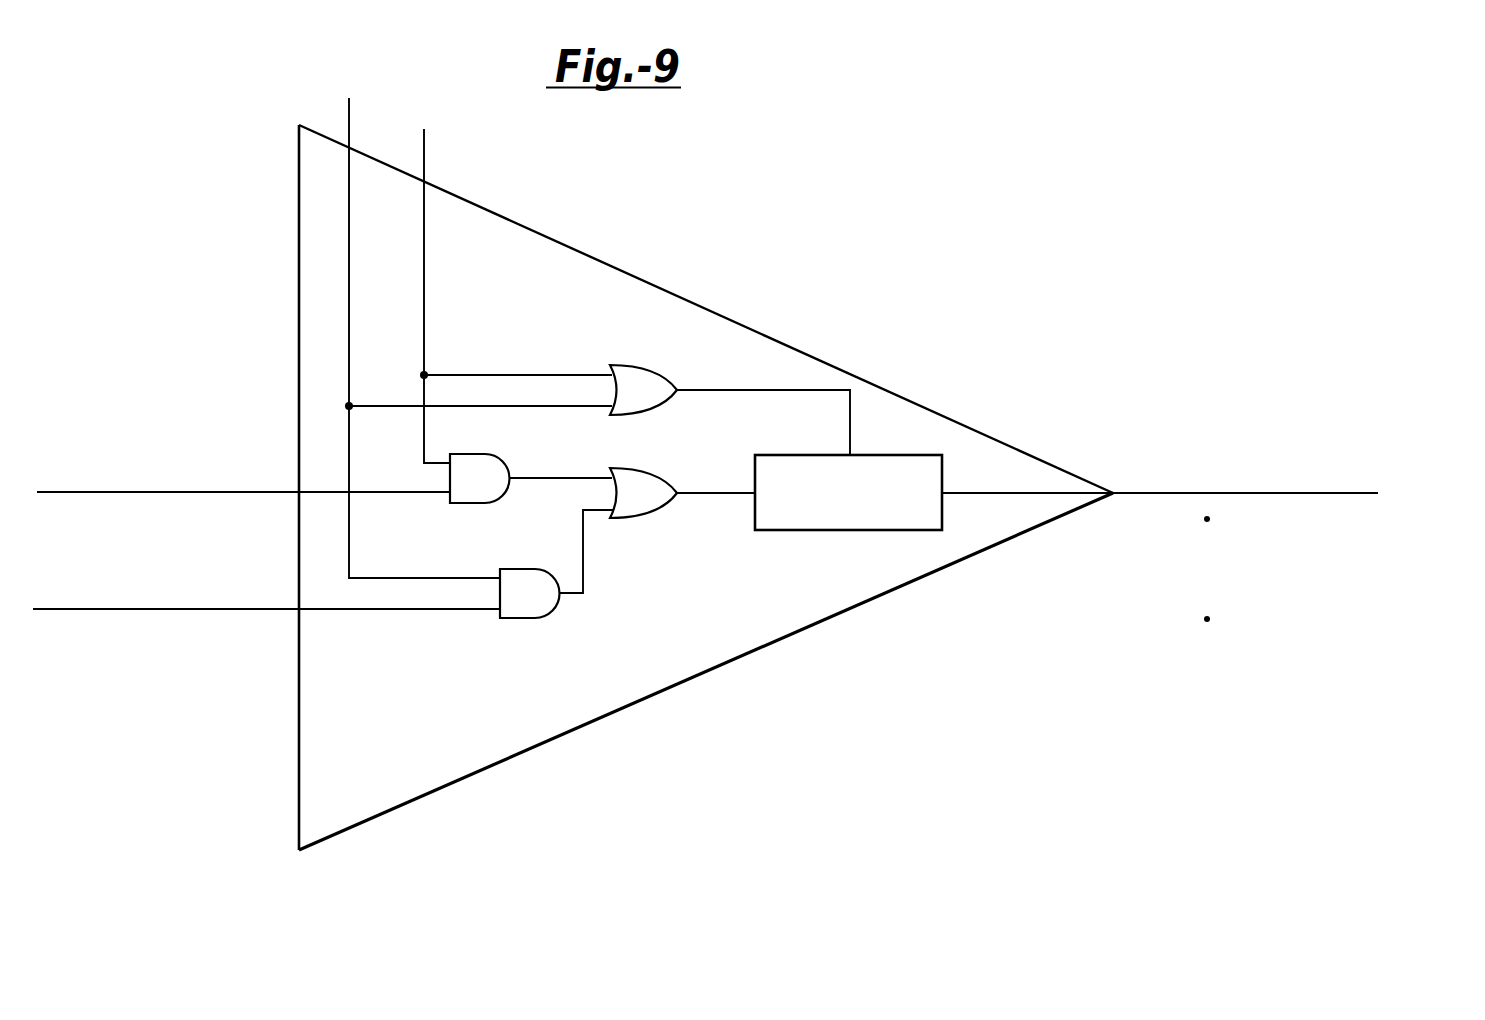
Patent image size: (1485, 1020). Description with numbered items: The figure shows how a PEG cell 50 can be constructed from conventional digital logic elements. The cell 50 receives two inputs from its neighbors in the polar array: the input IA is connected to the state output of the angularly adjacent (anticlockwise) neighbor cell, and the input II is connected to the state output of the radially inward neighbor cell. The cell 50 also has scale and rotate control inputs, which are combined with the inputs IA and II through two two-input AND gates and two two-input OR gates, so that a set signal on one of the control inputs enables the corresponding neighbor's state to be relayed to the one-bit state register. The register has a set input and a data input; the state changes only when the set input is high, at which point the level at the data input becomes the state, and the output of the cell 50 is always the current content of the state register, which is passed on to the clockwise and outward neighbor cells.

The PEG cell 50 is at (921, 405).
The input from angularly adjacent neighbor cell IA is at (268, 492).
The input from radially inward neighbor cell II is at (247, 610).